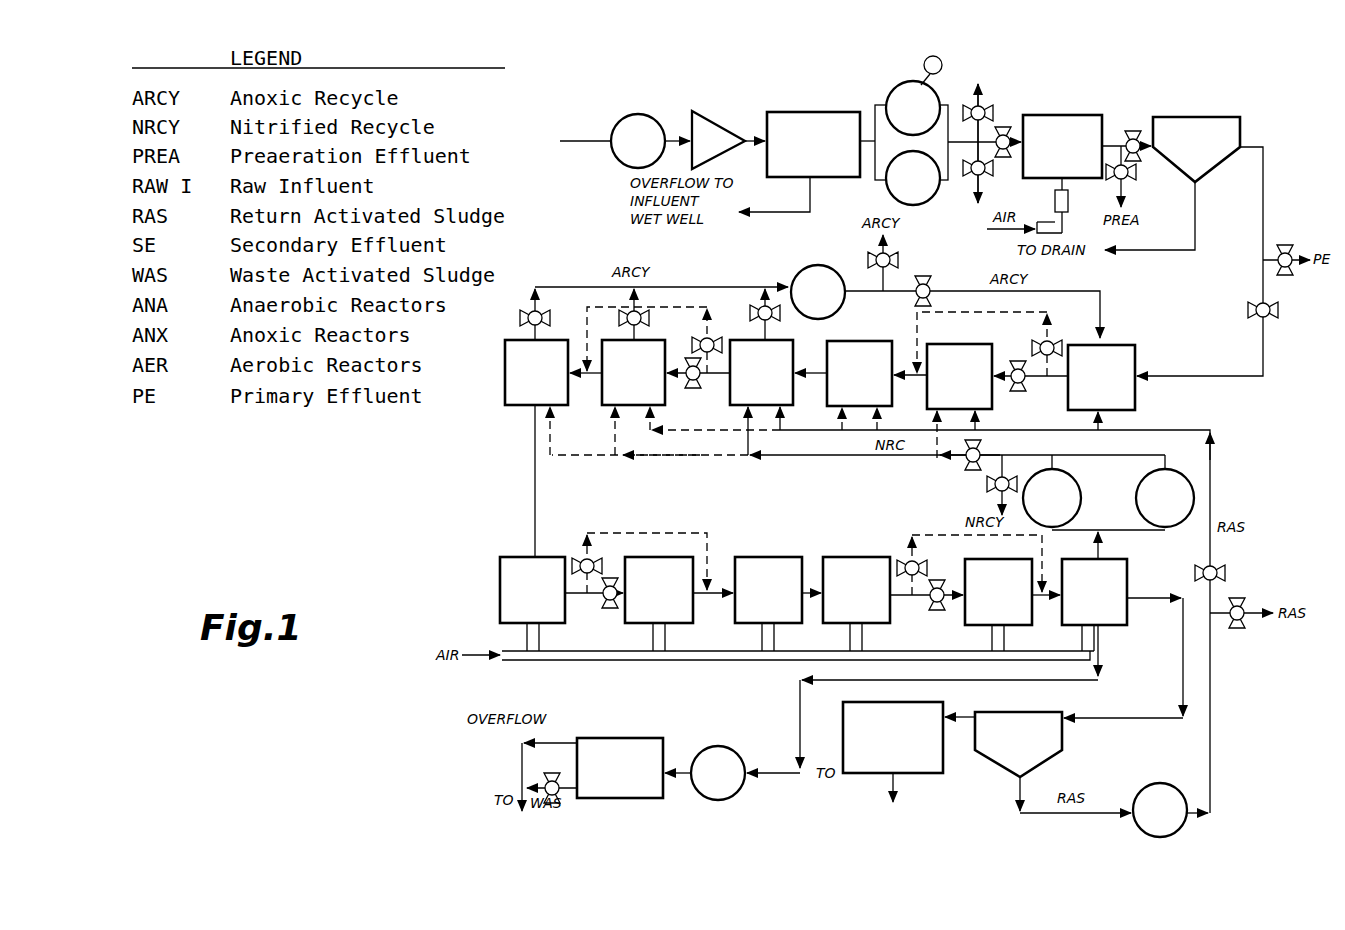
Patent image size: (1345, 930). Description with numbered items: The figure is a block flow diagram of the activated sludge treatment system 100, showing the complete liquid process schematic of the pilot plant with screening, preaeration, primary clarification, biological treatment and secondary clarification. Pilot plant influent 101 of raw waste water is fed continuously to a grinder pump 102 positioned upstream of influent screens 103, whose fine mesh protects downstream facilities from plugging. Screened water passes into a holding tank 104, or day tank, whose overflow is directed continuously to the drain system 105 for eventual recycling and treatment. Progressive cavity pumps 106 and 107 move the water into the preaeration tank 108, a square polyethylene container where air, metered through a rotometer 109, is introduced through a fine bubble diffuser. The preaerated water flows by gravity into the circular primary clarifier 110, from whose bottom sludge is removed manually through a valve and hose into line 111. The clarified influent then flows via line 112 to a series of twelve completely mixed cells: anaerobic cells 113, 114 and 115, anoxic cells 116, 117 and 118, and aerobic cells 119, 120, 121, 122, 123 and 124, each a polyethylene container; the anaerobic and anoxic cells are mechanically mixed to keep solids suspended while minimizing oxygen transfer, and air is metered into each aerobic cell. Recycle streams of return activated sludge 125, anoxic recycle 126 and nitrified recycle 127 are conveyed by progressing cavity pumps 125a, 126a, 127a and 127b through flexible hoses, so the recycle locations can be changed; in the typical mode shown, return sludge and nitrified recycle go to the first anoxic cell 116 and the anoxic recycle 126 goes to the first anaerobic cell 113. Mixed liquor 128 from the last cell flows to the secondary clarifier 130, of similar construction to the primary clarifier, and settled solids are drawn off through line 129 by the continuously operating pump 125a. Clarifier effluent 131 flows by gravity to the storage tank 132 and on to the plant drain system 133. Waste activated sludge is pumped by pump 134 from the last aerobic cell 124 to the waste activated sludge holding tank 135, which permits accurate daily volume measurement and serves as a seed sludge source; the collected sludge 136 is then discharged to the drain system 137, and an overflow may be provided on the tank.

The activated sludge treatment system 100 is at (1312, 128).
The pilot plant influent 101 is at (580, 141).
The grinder pump 102 is at (638, 141).
The influent screens 103 is at (718, 140).
The holding tank 104 is at (813, 144).
The drain system 105 is at (764, 212).
The progressive cavity pump 106 is at (914, 95).
The progressive cavity pump 107 is at (913, 178).
The preaeration tank 108 is at (1062, 146).
The rotometer 109 is at (1068, 201).
The primary clarifier 110 is at (1196, 149).
The sludge line 111 is at (1177, 255).
The influent line 112 is at (1263, 220).
The first anaerobic cell 113 is at (1101, 377).
The second anaerobic cell 114 is at (959, 376).
The third anaerobic cell 115 is at (859, 373).
The first anoxic cell 116 is at (761, 372).
The second anoxic cell 117 is at (633, 372).
The third anoxic cell 118 is at (536, 372).
The first aerobic cell 119 is at (532, 590).
The second aerobic cell 120 is at (659, 590).
The third aerobic cell 121 is at (768, 590).
The fourth aerobic cell 122 is at (856, 590).
The fifth aerobic cell 123 is at (998, 592).
The sixth aerobic cell 124 is at (1094, 592).
The return activated sludge 125 is at (1210, 430).
The return activated sludge pump 125a is at (1160, 810).
The anoxic recycle 126 is at (590, 283).
The anoxic recycle pump 126a is at (818, 292).
The nitrified recycle 127 is at (893, 462).
The nitrified recycle pump 127a is at (1052, 498).
The nitrified recycle pump 127b is at (1165, 498).
The mixed liquor 128 is at (1138, 716).
The settled solids line 129 is at (1070, 810).
The secondary clarifier 130 is at (1018, 744).
The clarifier effluent 131 is at (958, 714).
The storage tank 132 is at (893, 737).
The plant drain system 133 is at (897, 801).
The waste activated sludge pump 134 is at (718, 773).
The waste activated sludge holding tank 135 is at (620, 768).
The collected sludge 136 is at (518, 776).
The drain system 137 is at (540, 802).